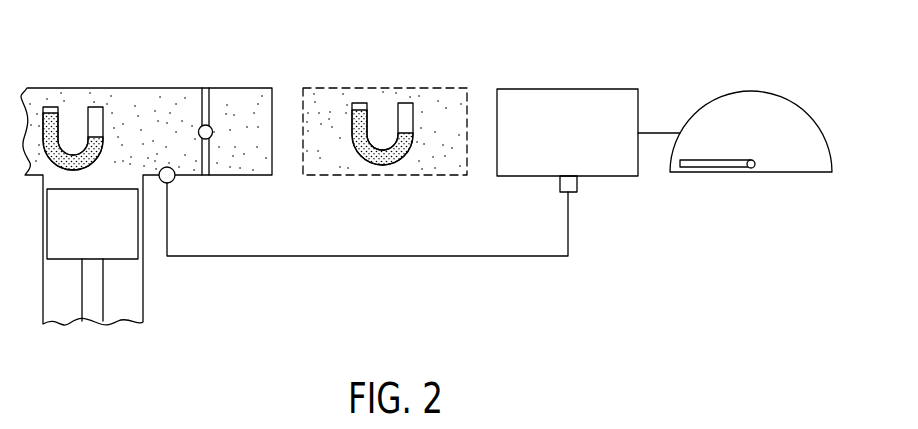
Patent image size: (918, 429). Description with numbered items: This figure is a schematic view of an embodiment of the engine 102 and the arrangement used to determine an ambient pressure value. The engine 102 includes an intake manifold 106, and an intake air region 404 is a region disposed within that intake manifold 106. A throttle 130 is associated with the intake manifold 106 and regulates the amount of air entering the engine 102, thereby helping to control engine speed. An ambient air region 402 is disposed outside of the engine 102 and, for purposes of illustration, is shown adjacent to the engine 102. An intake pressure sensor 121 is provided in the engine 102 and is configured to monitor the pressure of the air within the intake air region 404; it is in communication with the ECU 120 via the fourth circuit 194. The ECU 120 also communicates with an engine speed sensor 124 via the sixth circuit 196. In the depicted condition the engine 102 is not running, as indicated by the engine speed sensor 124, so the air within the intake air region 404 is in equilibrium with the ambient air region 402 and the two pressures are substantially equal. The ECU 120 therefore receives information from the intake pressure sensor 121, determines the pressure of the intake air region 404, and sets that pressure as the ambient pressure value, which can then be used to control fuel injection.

The engine 102 is at (66, 88).
The intake manifold 106 is at (177, 116).
The intake air region 404 is at (118, 118).
The throttle 130 is at (208, 100).
The ambient air region 402 is at (347, 88).
The ECU 120 is at (562, 88).
The intake pressure sensor 121 is at (172, 180).
The fourth circuit 194 is at (242, 258).
The sixth circuit 196 is at (663, 132).
The engine speed sensor 124 is at (765, 92).